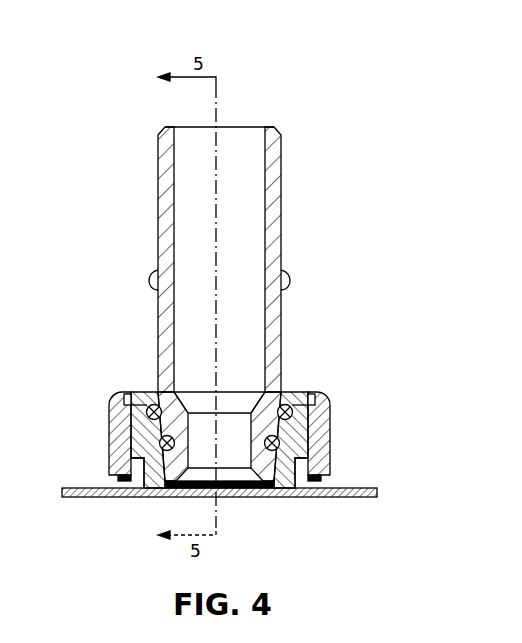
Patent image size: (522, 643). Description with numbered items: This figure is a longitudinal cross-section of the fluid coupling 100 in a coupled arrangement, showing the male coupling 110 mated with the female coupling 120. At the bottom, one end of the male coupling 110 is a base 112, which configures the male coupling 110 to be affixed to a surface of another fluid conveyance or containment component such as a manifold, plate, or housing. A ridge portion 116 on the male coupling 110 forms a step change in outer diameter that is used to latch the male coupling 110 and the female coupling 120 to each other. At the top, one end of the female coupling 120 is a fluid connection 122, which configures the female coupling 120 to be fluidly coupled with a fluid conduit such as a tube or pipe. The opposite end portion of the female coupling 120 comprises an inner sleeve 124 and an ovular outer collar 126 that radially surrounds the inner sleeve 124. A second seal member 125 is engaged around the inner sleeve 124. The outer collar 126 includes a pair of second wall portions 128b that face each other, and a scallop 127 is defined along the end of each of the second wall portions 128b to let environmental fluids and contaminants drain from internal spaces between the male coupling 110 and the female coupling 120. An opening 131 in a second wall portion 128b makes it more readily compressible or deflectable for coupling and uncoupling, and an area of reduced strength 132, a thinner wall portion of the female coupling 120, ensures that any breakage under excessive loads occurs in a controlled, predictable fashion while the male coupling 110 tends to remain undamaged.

The fluid coupling 100 is at (338, 140).
The male coupling portion 110 is at (334, 400).
The base 112 is at (366, 488).
The ridge portion 116 is at (110, 448).
The female coupling portion 120 is at (310, 330).
The fluid connection 122 is at (158, 198).
The inner sleeve 124 is at (334, 432).
The second seal member 125 is at (303, 395).
The ovular outer collar 126 is at (112, 415).
The scallop 127 is at (118, 488).
The second wall portions 128b is at (330, 418).
The opening 131 is at (128, 404).
The area of reduced strength 132 is at (150, 402).